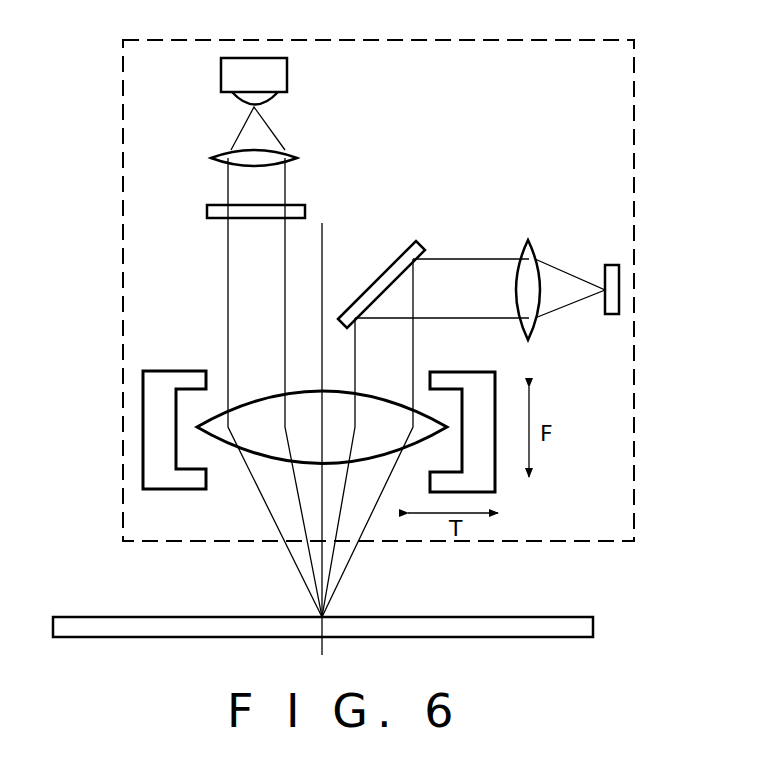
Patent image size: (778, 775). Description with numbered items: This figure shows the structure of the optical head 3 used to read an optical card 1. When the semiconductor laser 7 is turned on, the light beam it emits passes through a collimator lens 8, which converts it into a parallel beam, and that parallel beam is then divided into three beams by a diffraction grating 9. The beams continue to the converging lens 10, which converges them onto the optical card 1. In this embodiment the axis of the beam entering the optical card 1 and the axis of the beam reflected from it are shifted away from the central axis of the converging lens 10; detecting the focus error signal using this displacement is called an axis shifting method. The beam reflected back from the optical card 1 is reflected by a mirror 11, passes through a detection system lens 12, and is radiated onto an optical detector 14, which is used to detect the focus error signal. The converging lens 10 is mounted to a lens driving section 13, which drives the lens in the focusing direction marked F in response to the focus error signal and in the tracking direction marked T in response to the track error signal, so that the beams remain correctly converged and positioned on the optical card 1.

The optical card 1 is at (524, 617).
The optical head 3 is at (558, 40).
The semiconductor laser 7 is at (288, 69).
The collimator lens 8 is at (298, 153).
The diffraction grating 9 is at (306, 208).
The converging lens 10 is at (264, 410).
The mirror 11 is at (380, 278).
The detection system lens 12 is at (533, 252).
The lens driving section 13 is at (173, 491).
The optical detector 14 is at (612, 316).